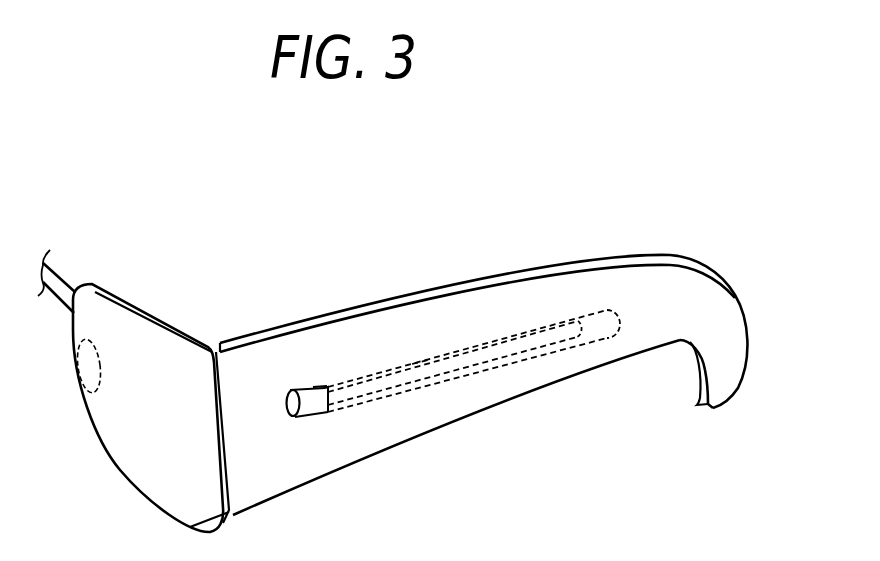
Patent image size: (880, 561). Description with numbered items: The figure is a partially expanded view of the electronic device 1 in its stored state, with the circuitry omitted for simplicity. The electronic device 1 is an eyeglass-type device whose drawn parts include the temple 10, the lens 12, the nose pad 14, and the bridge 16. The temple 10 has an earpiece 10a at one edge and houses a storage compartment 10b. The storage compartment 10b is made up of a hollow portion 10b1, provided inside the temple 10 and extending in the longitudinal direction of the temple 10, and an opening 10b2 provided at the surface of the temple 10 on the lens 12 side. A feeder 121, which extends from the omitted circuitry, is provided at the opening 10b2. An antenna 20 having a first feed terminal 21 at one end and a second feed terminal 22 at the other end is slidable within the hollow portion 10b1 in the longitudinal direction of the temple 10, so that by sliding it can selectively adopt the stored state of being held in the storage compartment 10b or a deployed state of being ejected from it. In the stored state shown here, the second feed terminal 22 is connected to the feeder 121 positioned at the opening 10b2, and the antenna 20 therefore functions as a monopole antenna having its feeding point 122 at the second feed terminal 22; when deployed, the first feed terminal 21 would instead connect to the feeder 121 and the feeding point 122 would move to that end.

The electronic device 1 is at (227, 234).
The temple 10 is at (573, 290).
The earpiece 10a is at (717, 303).
The storage compartment 10b is at (492, 338).
The hollow portion 10b1 is at (420, 361).
The opening 10b2 is at (313, 387).
The lens 12 is at (123, 432).
The nose pad 14 is at (88, 367).
The bridge 16 is at (55, 297).
The antenna 20 is at (459, 369).
The first feed terminal 21 is at (597, 330).
The second feed terminal 22 is at (307, 413).
The feeder 121 is at (332, 412).
The feeding point 122 is at (328, 381).